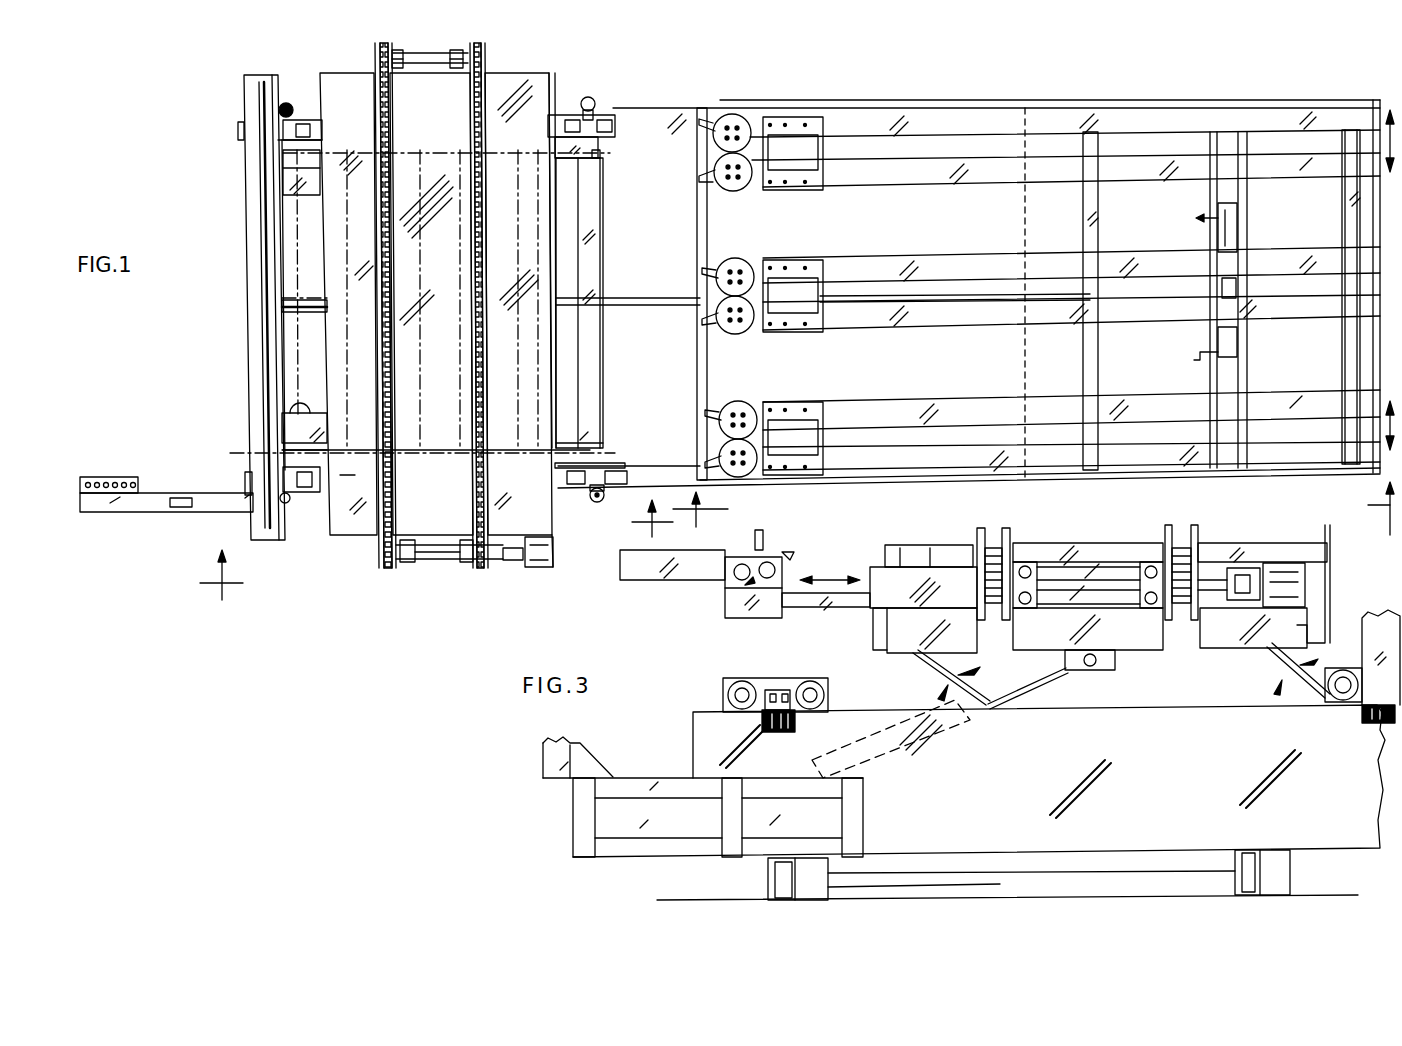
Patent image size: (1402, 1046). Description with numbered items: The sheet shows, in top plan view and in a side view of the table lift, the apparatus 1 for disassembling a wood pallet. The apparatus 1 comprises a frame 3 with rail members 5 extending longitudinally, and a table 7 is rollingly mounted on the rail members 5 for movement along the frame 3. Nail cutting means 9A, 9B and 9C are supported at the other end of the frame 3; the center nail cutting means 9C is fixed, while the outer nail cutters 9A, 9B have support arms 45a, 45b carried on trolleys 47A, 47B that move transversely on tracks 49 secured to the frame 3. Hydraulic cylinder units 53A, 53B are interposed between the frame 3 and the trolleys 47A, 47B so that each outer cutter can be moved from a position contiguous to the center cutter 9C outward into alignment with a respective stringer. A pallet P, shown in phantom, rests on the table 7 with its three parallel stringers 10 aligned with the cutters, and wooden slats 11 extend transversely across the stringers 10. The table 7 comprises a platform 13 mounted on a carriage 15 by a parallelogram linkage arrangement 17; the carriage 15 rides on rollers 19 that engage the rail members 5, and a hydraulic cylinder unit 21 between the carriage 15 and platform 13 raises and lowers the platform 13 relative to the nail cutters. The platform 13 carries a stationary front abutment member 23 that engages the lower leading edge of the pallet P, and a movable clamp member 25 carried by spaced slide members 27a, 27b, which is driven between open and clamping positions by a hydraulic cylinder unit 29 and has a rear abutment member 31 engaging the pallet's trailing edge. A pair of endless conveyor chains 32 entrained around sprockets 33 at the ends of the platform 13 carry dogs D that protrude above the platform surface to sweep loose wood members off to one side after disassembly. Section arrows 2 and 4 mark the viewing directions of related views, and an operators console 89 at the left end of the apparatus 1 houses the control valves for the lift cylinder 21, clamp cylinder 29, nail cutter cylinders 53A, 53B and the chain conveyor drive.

In FIG. 1, the apparatus 1 is at (1068, 43).
In FIG. 1, the section line 2 is at (436, 558).
In FIG. 1, the frame 3 is at (694, 104).
In FIG. 3, the frame 3 is at (1355, 808).
In FIG. 1, the section line 4 is at (1037, 510).
In FIG. 1, the rail members 5 is at (642, 113).
In FIG. 1, the table 7 is at (558, 72).
In FIG. 3, the table 7 is at (1340, 572).
In FIG. 1, the nail cutting means 9A is at (848, 90).
In FIG. 1, the nail cutting means 9B is at (941, 402).
In FIG. 1, the fixed center nail cutting means 9C is at (936, 254).
In FIG. 1, the stringers 10 is at (540, 70).
In FIG. 1, the wooden slats 11 is at (562, 86).
In FIG. 1, the platform 13 is at (420, 100).
In FIG. 3, the platform 13 is at (1070, 550).
In FIG. 1, the carriage 15 is at (600, 158).
In FIG. 3, the carriage 15 is at (790, 678).
In FIG. 3, the parallelogram linkage arrangement 17 is at (930, 665).
In FIG. 1, the rollers 19 is at (298, 120).
In FIG. 3, the rollers 19 is at (730, 680).
In FIG. 3, the hydraulic cylinder unit 21 is at (995, 705).
In FIG. 1, the stationary front abutment member 23 is at (605, 392).
In FIG. 3, the stationary front abutment member 23 is at (1325, 528).
In FIG. 1, the movable clamp member 25 is at (250, 378).
In FIG. 3, the movable clamp member 25 is at (724, 586).
In FIG. 1, the slide member 27a is at (310, 200).
In FIG. 3, the slide member 27a is at (820, 608).
In FIG. 1, the slide member 27b is at (283, 413).
In FIG. 1, the hydraulic cylinder unit 29 is at (307, 318).
In FIG. 1, the rear abutment member 31 is at (262, 98).
In FIG. 3, the rear abutment member 31 is at (765, 548).
In FIG. 1, the endless conveyor chains 32 is at (390, 570).
In FIG. 1, the sprockets 33 is at (384, 45).
In FIG. 1, the support arm 45a is at (948, 128).
In FIG. 1, the support arm 45b is at (995, 100).
In FIG. 1, the trolley 47A is at (1300, 100).
In FIG. 1, the trolley 47B is at (1192, 472).
In FIG. 1, the tracks 49 is at (1103, 222).
In FIG. 1, the hydraulic cylinder unit 53A is at (1222, 240).
In FIG. 1, the hydraulic cylinder unit 53B is at (1245, 356).
In FIG. 1, the operators console 89 is at (132, 518).
In FIG. 1, the wooden pallet P is at (340, 145).
In FIG. 1, the dogs D is at (360, 520).